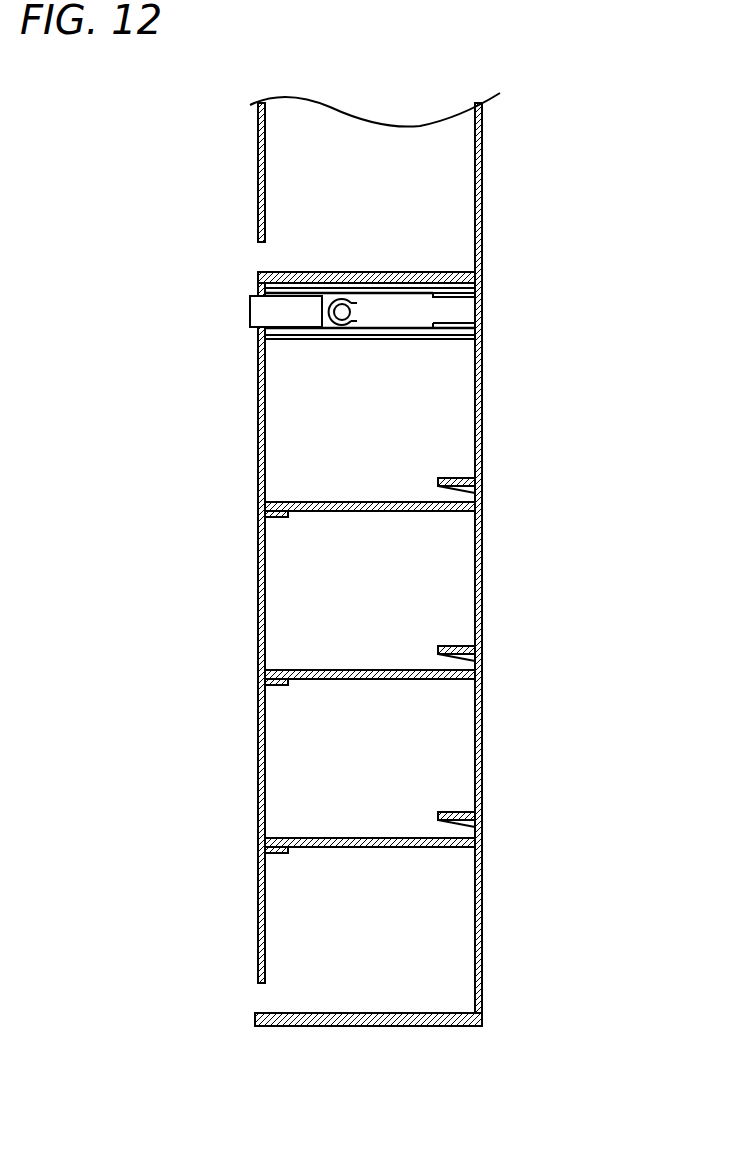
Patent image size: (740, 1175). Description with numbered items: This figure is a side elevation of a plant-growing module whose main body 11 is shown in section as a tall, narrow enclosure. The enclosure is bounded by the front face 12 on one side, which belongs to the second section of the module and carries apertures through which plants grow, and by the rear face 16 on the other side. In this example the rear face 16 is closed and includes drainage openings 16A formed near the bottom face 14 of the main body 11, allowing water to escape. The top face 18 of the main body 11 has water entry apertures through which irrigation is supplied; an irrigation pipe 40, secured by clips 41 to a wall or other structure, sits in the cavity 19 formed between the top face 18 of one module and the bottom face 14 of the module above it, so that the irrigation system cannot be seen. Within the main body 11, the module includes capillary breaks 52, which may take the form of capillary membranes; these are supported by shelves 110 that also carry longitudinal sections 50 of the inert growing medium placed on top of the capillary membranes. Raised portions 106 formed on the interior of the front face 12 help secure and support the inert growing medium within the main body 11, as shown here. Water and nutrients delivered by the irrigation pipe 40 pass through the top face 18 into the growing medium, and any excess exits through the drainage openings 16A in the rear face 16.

The main body 11 is at (483, 190).
The front face 12 is at (535, 558).
The bottom face 14 is at (363, 1027).
The rear face 16 is at (258, 772).
The drainage openings 16A is at (260, 252).
The top face 18 is at (383, 330).
The cavity 19 is at (447, 314).
The irrigation pipe 40 is at (342, 313).
The clips 41 is at (250, 307).
The longitudinal sections 50 is at (373, 436).
The capillary breaks 52 is at (339, 695).
The raised portions 106 is at (453, 475).
The shelves 110 is at (278, 517).